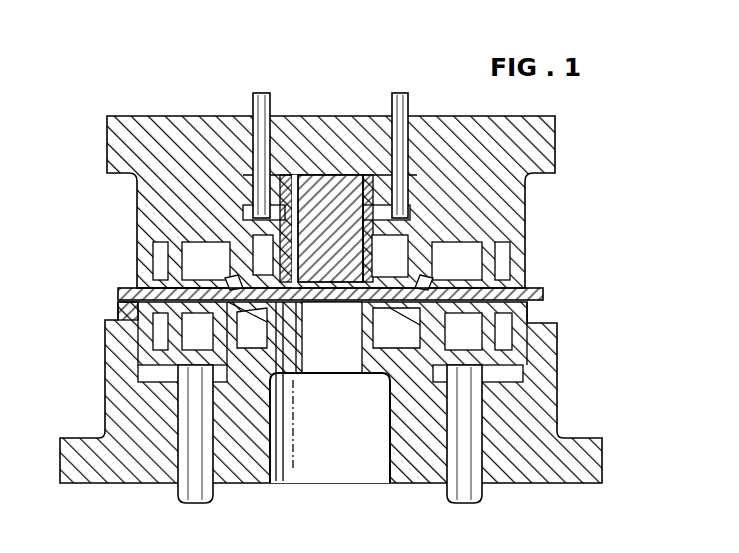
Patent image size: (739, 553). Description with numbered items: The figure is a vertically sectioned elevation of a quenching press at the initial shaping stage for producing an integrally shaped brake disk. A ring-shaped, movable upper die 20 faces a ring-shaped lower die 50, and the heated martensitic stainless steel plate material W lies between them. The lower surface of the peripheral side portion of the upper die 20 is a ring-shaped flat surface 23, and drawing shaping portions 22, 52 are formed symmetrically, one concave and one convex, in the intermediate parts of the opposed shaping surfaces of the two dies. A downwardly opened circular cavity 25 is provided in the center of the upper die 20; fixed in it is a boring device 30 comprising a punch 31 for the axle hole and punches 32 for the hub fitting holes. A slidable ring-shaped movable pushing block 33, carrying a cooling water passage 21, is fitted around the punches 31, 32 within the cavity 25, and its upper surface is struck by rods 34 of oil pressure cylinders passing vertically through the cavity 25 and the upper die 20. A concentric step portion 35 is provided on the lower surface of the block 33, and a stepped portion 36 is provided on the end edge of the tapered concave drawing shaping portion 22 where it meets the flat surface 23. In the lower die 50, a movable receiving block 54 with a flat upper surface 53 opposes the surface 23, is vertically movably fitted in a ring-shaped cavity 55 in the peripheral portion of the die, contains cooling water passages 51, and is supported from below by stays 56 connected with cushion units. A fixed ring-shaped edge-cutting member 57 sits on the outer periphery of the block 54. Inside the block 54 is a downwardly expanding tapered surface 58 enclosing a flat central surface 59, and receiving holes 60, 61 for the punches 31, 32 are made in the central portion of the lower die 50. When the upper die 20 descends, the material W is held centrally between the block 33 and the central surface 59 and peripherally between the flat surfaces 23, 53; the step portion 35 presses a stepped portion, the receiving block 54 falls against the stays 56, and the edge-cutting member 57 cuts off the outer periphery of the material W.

The upper die 20 is at (556, 140).
The cooling water passage 21 is at (455, 240).
The drawing shaping portion 22 is at (438, 282).
The ring-shaped flat surface 23 is at (152, 298).
The circular cavity 25 is at (224, 235).
The boring device 30 is at (327, 262).
The punch 31 is at (330, 185).
The punches 32 is at (312, 180).
The movable pushing block 33 is at (365, 175).
The rods 34 is at (254, 110).
The step portion 35 is at (230, 282).
The stepped portion 36 is at (172, 276).
The lower die 50 is at (557, 390).
The cooling water passage 51 is at (462, 335).
The drawing shaping portion 52 is at (279, 430).
The flat upper surface 53 is at (160, 282).
The movable receiving block 54 is at (145, 340).
The ring-shaped cavity 55 is at (142, 373).
The stays 56 is at (190, 495).
The edge-cutting member 57 is at (124, 310).
The tapered surface 58 is at (395, 340).
The central surface 59 is at (332, 337).
The receiving hole 60 is at (290, 365).
The receiving hole 61 is at (304, 425).
The plate material W is at (545, 292).